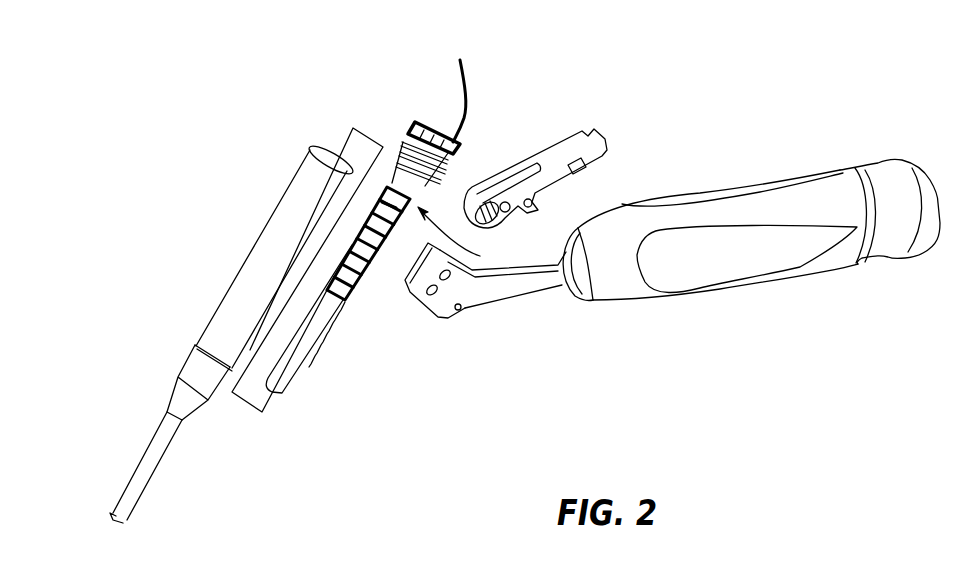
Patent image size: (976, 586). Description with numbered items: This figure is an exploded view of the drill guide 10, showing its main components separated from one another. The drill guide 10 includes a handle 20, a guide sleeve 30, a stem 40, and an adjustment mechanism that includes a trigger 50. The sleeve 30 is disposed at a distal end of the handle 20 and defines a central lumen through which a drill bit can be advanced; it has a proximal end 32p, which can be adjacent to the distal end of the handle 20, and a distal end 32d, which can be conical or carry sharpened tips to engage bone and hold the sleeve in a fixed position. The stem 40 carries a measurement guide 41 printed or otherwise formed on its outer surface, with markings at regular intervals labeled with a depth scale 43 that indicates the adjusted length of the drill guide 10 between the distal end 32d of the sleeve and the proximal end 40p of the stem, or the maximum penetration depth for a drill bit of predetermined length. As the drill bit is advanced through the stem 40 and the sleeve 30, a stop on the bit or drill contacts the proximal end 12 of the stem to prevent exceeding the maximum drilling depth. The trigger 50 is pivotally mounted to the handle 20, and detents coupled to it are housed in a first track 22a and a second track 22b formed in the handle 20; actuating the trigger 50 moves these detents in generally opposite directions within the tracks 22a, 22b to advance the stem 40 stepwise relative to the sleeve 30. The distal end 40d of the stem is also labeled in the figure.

The drill guide 10 is at (672, 244).
The proximal end of the stem 12 is at (462, 90).
The handle 20 is at (830, 257).
The first track 22a is at (430, 300).
The second track 22b is at (452, 270).
The guide sleeve 30 is at (191, 334).
The proximal end of the sleeve 32p is at (317, 150).
The distal end of the sleeve 32d is at (110, 522).
The stem 40 is at (369, 248).
The proximal end of the stem 40p is at (435, 122).
The distal end of holder 40d is at (282, 393).
The measurement guide 41 is at (462, 234).
The depth scale 43 is at (387, 187).
The trigger 50 is at (572, 147).